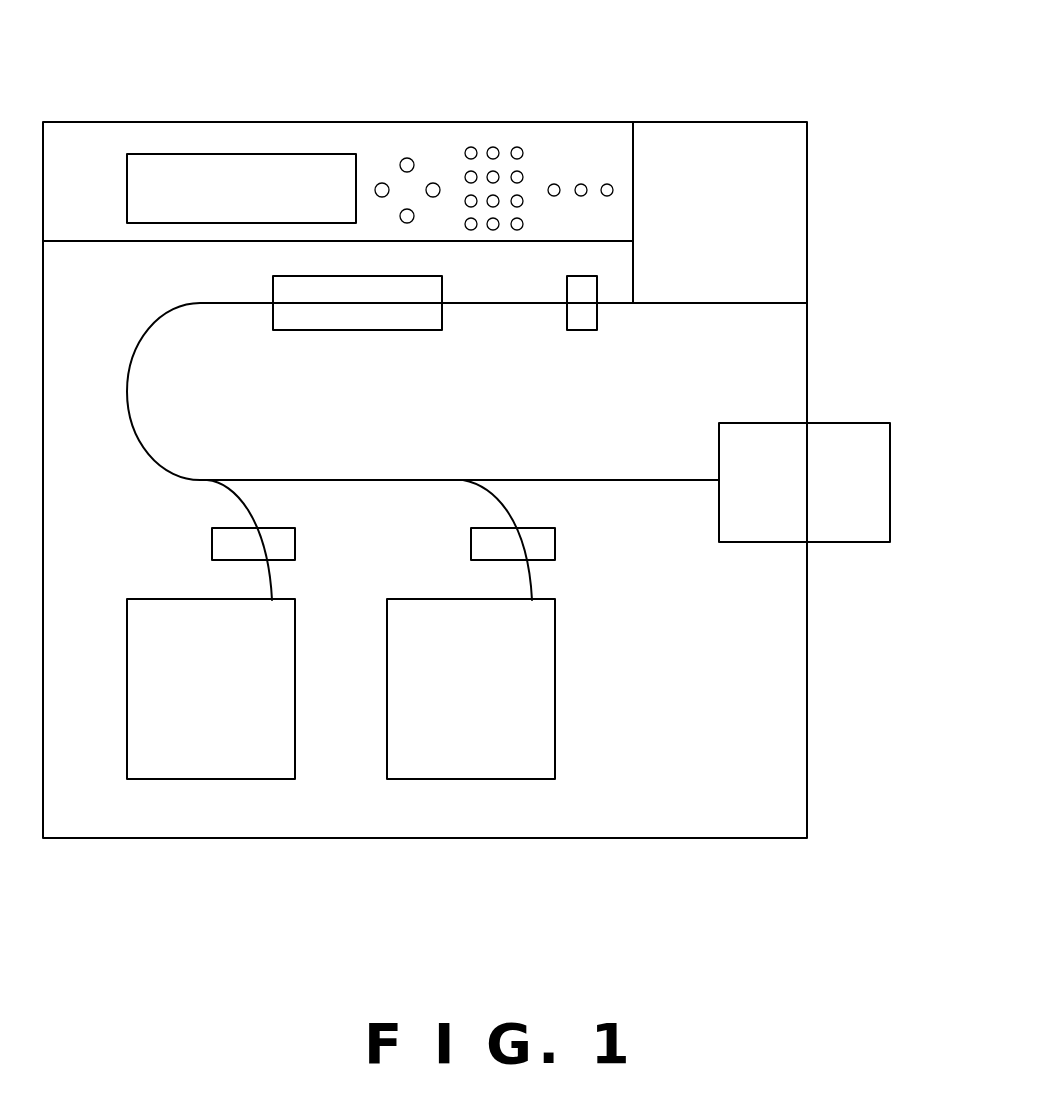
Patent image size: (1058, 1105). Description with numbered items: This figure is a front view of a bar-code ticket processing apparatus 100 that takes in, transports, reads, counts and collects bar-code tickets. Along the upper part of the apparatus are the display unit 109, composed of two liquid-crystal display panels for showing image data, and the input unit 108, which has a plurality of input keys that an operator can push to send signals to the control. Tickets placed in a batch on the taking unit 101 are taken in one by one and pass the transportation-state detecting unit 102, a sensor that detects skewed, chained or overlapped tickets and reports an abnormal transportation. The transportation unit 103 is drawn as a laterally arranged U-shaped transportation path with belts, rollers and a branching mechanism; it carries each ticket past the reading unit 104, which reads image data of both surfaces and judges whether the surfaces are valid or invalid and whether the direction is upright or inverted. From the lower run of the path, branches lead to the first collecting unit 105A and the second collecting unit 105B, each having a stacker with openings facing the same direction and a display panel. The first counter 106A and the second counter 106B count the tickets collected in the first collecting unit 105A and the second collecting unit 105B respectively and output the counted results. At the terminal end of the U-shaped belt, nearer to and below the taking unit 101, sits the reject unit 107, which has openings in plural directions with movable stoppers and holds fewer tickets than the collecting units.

The bar-code ticket processing apparatus 100 is at (634, 78).
The taking unit 101 is at (807, 145).
The transportation-state detecting unit 102 is at (597, 318).
The transportation unit 103 is at (500, 305).
The reading unit 104 is at (355, 330).
The first collecting unit 105A is at (172, 779).
The second collecting unit 105B is at (510, 779).
The first counter 106A is at (212, 540).
The second counter 106B is at (471, 540).
The reject unit 107 is at (847, 423).
The input unit 108 is at (492, 121).
The display unit 109 is at (240, 223).